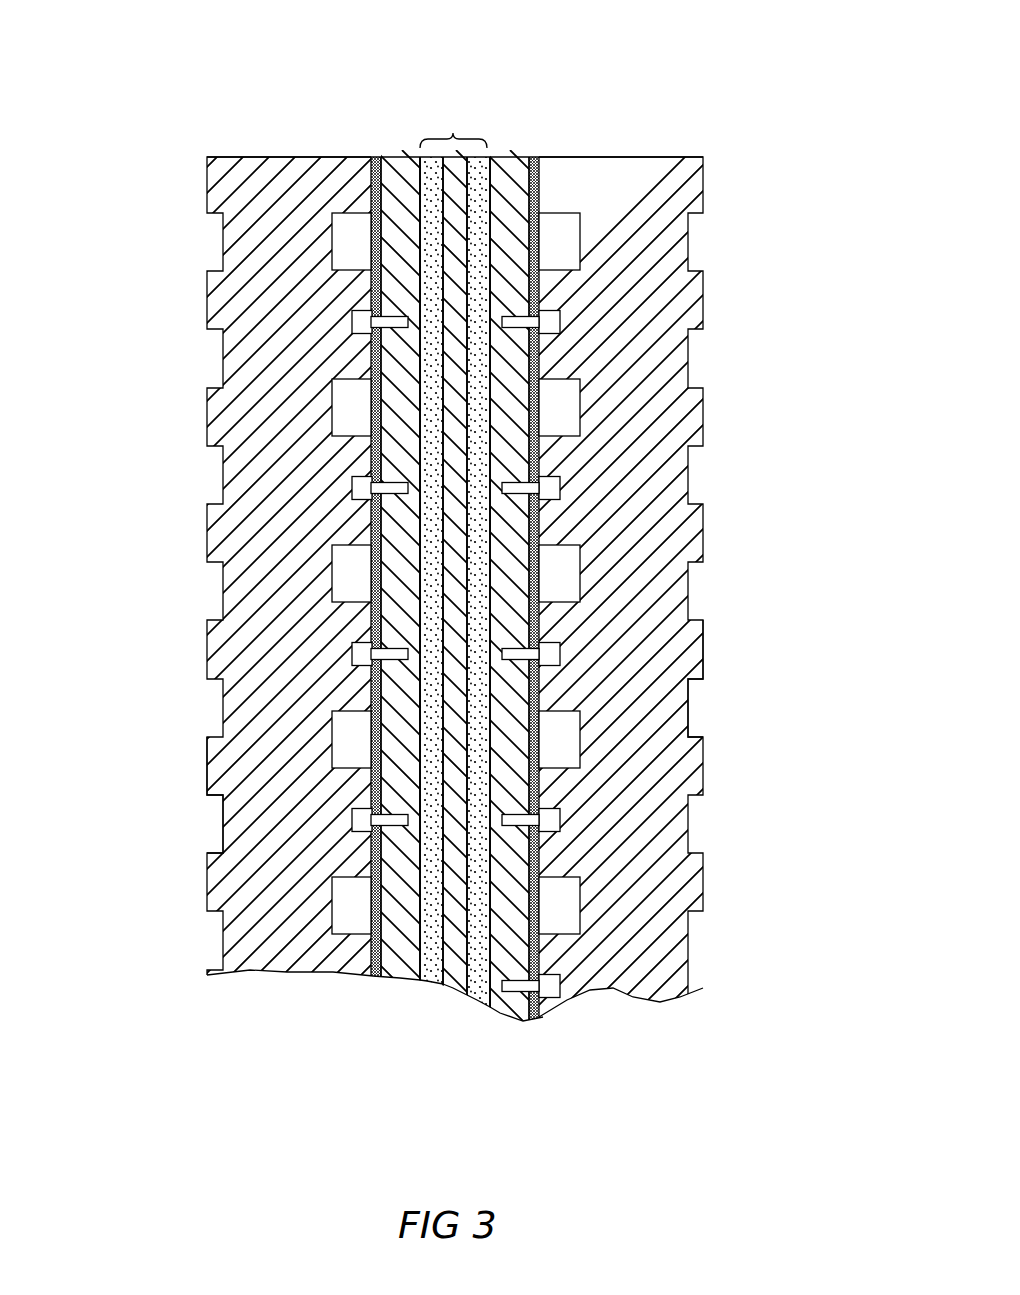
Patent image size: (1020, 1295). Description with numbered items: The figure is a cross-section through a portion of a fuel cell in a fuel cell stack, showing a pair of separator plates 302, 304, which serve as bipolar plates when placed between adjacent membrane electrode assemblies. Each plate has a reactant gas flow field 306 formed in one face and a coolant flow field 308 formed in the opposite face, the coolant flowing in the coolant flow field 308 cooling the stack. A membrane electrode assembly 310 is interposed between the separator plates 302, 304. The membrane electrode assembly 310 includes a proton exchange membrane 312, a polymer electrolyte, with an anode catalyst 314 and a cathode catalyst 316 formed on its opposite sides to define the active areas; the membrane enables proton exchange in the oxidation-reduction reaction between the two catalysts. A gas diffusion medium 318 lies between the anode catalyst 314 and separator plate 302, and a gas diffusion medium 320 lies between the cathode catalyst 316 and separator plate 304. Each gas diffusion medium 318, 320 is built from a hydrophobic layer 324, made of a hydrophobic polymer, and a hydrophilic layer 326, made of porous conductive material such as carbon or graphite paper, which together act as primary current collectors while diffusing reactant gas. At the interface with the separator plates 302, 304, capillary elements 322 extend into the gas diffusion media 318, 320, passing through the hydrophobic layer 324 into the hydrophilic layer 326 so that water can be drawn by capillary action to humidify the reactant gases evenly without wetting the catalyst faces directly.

The separator plate 302 is at (676, 188).
The separator plate 304 is at (208, 171).
The reactant gas flow field 306 is at (334, 546).
The coolant flow field 308 is at (698, 708).
The membrane electrode assembly 310 is at (453, 131).
The proton exchange membrane 312 is at (457, 994).
The anode catalyst 314 is at (480, 1011).
The cathode catalyst 316 is at (430, 982).
The gas diffusion medium 318 is at (513, 158).
The gas diffusion medium 320 is at (395, 158).
The capillary element 322 is at (559, 324).
The hydrophobic layer 324 is at (375, 157).
The hydrophilic layer 326 is at (430, 157).